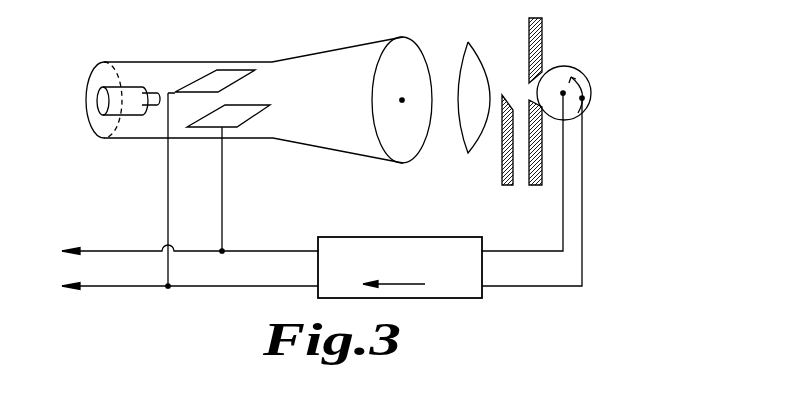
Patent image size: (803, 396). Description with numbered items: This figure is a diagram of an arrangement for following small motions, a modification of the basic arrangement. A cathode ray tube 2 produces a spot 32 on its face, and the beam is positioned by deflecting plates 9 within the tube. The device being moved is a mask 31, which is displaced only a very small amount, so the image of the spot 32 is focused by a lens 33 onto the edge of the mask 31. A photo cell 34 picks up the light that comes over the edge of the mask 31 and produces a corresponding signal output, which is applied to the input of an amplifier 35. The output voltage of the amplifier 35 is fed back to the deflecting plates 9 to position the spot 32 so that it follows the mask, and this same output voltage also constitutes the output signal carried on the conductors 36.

The cathode ray tube 2 is at (353, 53).
The deflecting plates 9 is at (250, 107).
The mask 31 is at (502, 170).
The spot 32 is at (402, 100).
The lens 33 is at (478, 65).
The photo cell 34 is at (588, 83).
The amplifier 35 is at (387, 208).
The conductors 36 is at (72, 256).